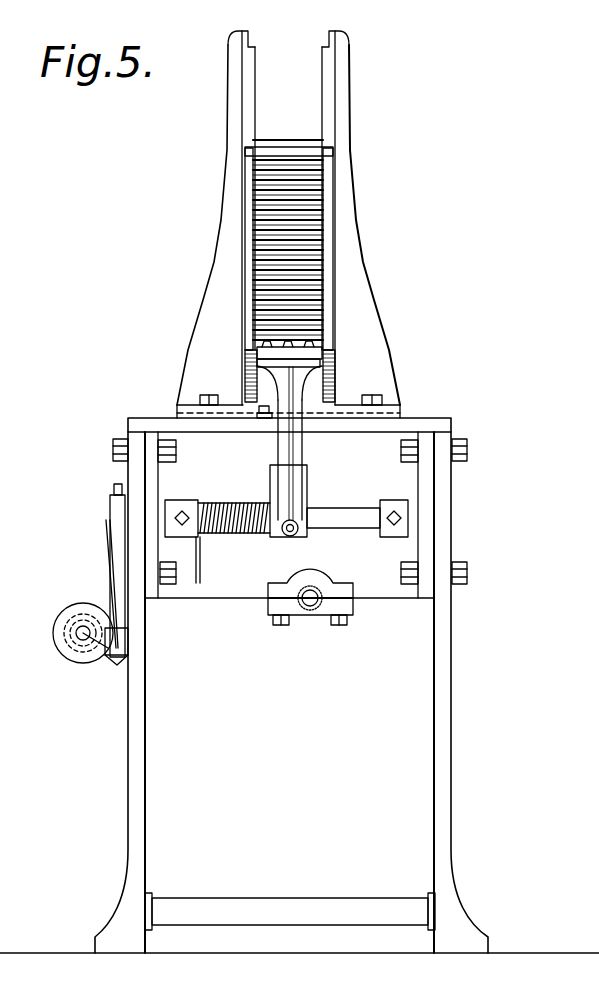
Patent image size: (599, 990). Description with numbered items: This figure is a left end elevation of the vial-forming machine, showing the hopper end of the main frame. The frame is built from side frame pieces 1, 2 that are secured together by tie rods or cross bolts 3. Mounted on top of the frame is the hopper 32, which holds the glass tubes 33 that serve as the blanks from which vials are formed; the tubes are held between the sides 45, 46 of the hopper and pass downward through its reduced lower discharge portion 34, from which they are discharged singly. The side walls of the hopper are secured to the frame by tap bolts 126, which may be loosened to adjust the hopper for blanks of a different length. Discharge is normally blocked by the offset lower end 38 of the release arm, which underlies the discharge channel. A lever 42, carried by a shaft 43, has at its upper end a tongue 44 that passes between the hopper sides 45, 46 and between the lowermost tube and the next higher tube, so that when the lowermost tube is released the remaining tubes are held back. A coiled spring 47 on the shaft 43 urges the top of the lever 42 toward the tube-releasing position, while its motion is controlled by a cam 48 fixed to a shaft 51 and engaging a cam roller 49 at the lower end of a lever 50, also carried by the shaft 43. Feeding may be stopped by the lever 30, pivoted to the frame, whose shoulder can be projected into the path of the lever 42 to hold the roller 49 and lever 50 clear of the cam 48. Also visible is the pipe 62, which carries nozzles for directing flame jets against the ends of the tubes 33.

The side frame piece 1 is at (445, 660).
The side frame piece 2 is at (140, 706).
The tie rods or cross bolts 3 is at (257, 905).
The lever 30 is at (266, 418).
The hopper 32 is at (288, 198).
The glass tubes 33 is at (288, 240).
The reduced lower discharge portion 34 is at (253, 282).
The offset lower end 38 is at (252, 358).
The lever 42 is at (303, 380).
The shaft 43 is at (338, 508).
The tongue 44 is at (310, 343).
The side of the hopper 45 is at (233, 260).
The side of the hopper 46 is at (343, 260).
The coiled spring 47 is at (234, 533).
The cam 48 is at (74, 606).
The cam roller 49 is at (106, 652).
The lever 50 is at (118, 553).
The shaft 51 is at (84, 636).
The pipe 62 is at (310, 603).
The tap bolts 126 is at (410, 383).